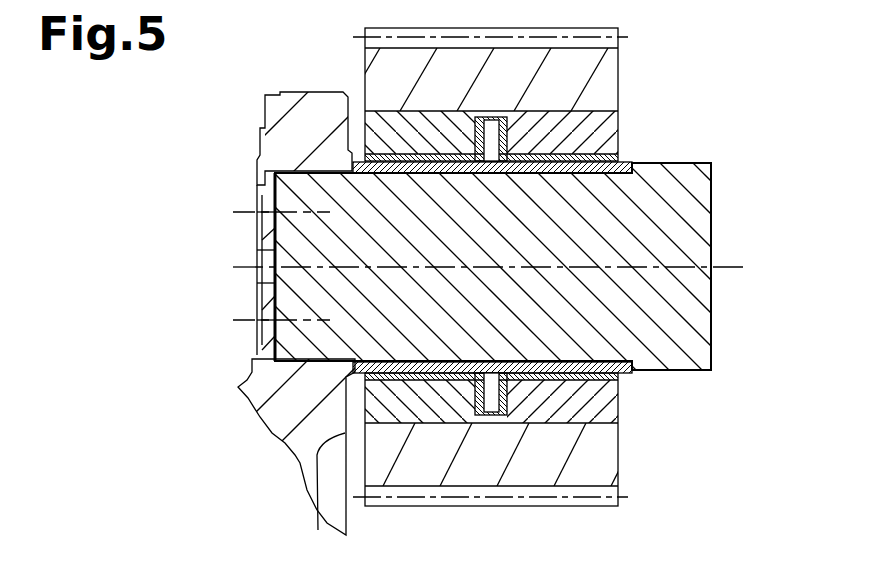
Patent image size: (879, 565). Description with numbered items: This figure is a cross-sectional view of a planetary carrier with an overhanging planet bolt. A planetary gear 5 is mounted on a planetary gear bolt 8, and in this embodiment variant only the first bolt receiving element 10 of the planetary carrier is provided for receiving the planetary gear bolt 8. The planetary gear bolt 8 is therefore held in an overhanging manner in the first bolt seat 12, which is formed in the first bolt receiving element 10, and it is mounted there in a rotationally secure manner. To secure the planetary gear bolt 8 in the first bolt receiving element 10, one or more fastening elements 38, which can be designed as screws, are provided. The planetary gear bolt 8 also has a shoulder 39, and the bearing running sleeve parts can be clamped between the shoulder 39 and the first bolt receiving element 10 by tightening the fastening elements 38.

The planetary gear 5 is at (572, 80).
The planetary gear bolt 8 is at (683, 235).
The first bolt receiving element 10 is at (273, 108).
The first bolt seat 12 is at (215, 179).
The fastening element 38 is at (243, 213).
The shoulder 39 is at (685, 170).